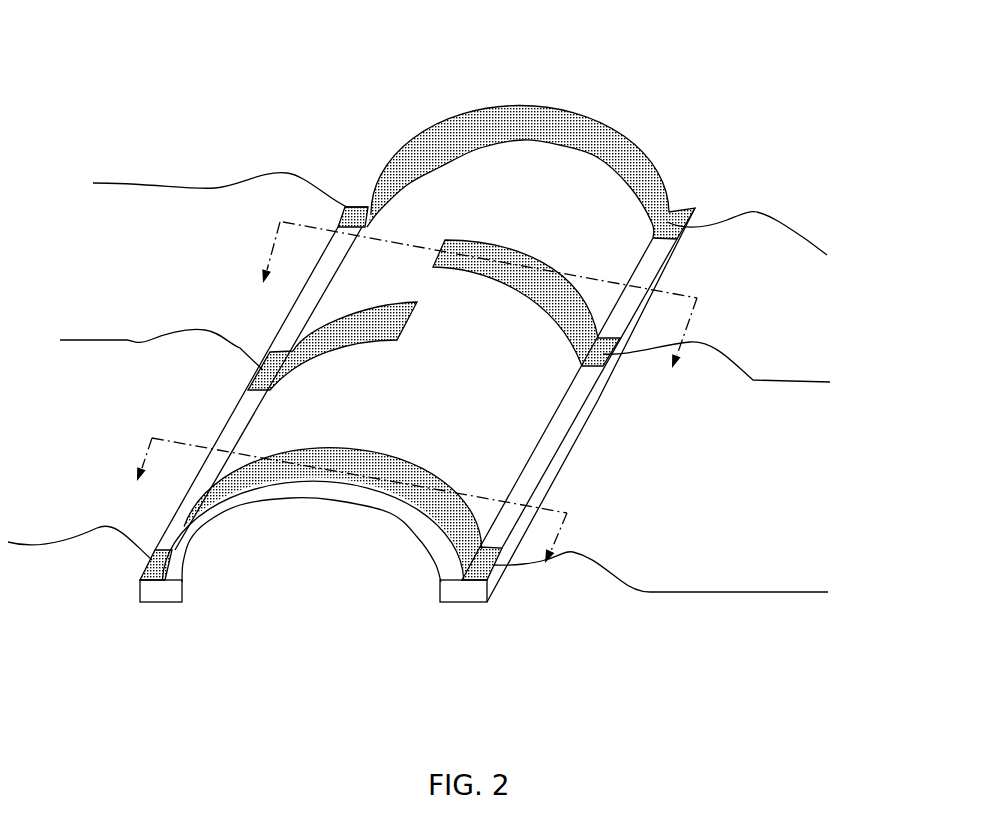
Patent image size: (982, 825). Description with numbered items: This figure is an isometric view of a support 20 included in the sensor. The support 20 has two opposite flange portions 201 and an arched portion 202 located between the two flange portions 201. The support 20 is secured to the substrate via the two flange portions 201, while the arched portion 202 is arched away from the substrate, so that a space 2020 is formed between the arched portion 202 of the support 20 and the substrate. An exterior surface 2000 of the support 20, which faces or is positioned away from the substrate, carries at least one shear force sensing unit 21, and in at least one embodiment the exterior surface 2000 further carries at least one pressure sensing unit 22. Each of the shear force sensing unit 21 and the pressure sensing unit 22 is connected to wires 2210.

The support 20 is at (361, 45).
The shear force sensing unit 21 is at (322, 374).
The pressure sensing unit 22 is at (525, 85).
The flange portion 201 is at (543, 447).
The arched portion 202 is at (467, 370).
The exterior surface 2000 is at (445, 173).
The space 2020 is at (323, 560).
The wires 2210 is at (757, 213).